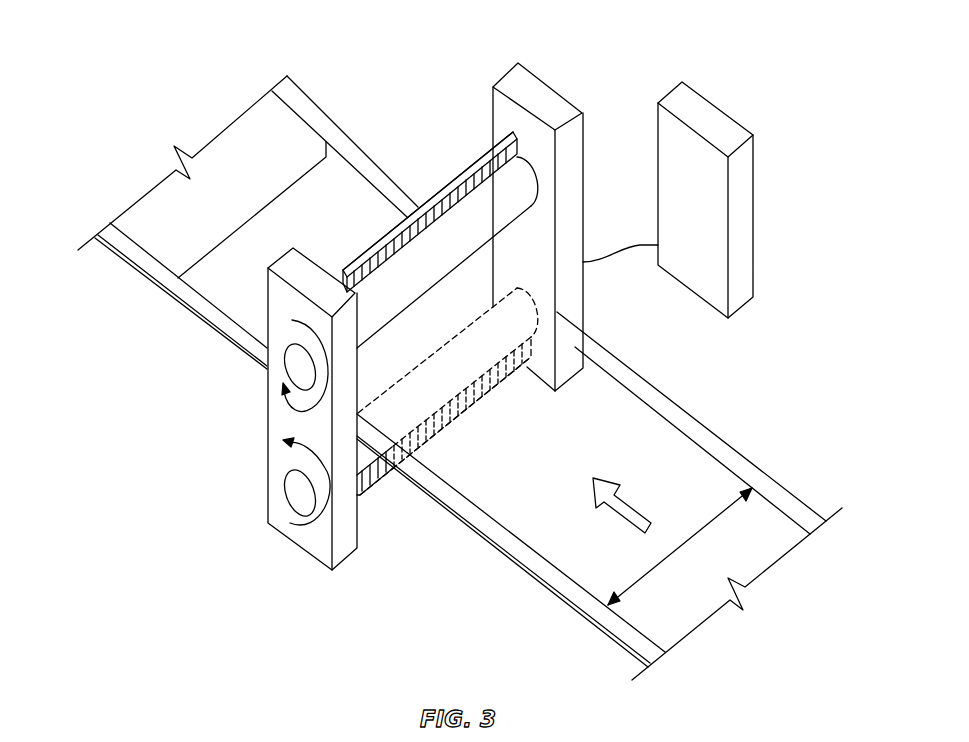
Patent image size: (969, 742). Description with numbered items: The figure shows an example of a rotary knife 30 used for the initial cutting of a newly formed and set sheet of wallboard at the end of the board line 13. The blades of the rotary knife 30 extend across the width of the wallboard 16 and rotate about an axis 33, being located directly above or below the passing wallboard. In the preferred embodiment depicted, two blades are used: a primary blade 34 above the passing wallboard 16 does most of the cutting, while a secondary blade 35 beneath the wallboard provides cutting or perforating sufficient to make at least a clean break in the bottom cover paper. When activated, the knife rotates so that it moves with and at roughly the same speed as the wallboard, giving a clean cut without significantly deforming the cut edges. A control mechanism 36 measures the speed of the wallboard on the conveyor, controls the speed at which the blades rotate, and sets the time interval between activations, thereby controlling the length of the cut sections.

The rotary knife 30 is at (383, 47).
The board line 13 is at (745, 524).
The wallboard 16 is at (683, 547).
The axis 33 is at (302, 367).
The primary blade 34 is at (459, 183).
The secondary blade 35 is at (480, 396).
The control mechanism 36 is at (675, 183).